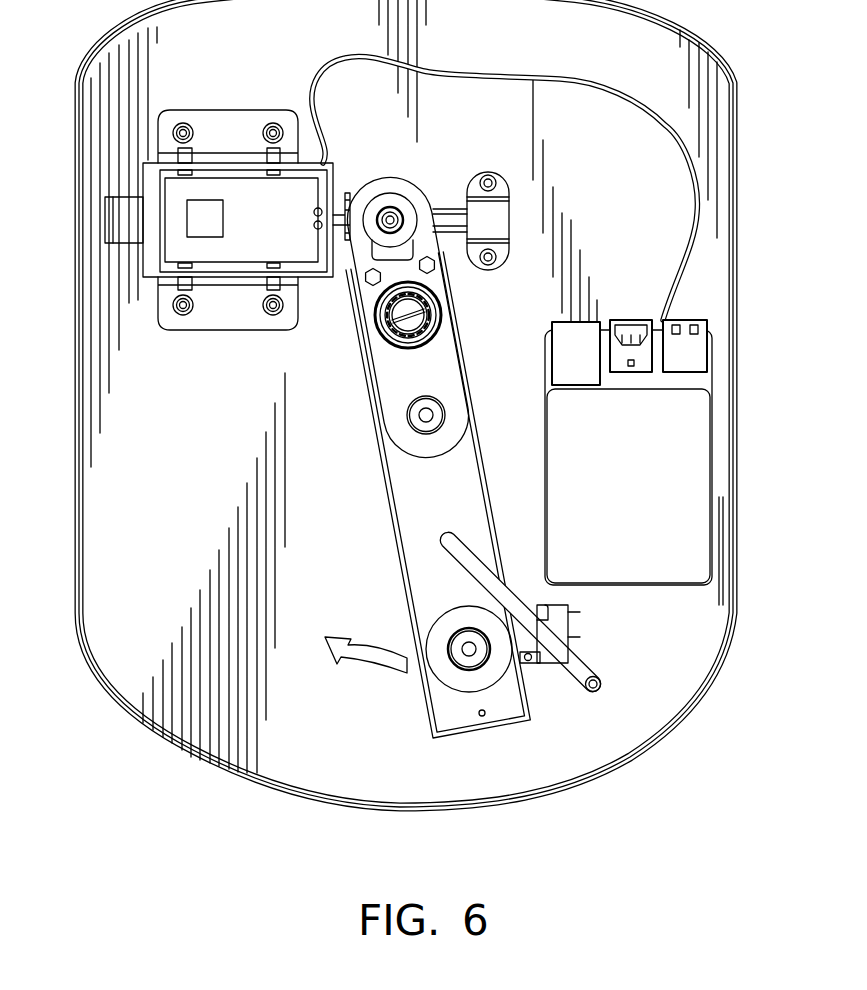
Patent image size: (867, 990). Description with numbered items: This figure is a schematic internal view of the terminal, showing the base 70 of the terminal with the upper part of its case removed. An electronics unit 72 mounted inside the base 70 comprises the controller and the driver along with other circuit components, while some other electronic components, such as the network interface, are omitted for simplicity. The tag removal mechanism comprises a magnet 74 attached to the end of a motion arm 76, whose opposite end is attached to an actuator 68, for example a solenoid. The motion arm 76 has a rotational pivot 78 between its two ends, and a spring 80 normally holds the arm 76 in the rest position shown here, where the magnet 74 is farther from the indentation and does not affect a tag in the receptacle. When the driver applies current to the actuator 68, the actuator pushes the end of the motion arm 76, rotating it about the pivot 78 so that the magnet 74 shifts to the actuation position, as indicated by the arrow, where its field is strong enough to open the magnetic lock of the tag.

The actuator 68 is at (150, 177).
The base 70 is at (719, 660).
The electronics unit 72 is at (678, 468).
The magnet 74 is at (463, 683).
The motion arm 76 is at (360, 359).
The pivot 78 is at (436, 412).
The spring 80 is at (465, 558).